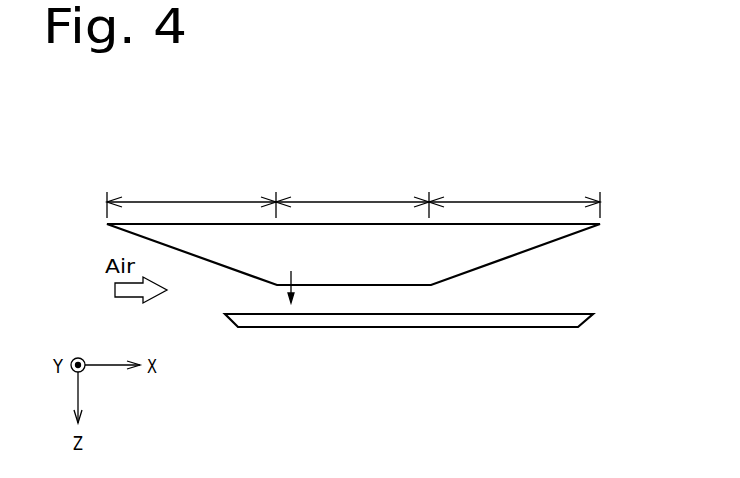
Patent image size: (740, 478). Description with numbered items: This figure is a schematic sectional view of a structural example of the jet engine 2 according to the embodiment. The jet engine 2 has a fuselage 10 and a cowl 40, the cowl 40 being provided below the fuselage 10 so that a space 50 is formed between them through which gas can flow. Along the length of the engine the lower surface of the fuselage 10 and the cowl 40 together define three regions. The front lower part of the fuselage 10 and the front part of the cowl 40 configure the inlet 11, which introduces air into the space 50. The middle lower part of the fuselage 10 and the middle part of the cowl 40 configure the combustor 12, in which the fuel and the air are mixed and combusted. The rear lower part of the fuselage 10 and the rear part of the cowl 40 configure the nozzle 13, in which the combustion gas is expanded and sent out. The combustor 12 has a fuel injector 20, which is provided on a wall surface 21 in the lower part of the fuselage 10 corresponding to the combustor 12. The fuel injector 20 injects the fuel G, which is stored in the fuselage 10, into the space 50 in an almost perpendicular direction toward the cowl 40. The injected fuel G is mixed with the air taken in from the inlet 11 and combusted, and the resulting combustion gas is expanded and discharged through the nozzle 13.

The jet engine 2 is at (160, 108).
The fuselage 10 is at (550, 236).
The inlet 11 is at (174, 202).
The combustor 12 is at (345, 202).
The nozzle 13 is at (500, 202).
The fuel injector 20 is at (292, 287).
The wall surface 21 is at (388, 286).
The cowl 40 is at (553, 318).
The space 50 is at (552, 283).
The fuel G is at (289, 298).